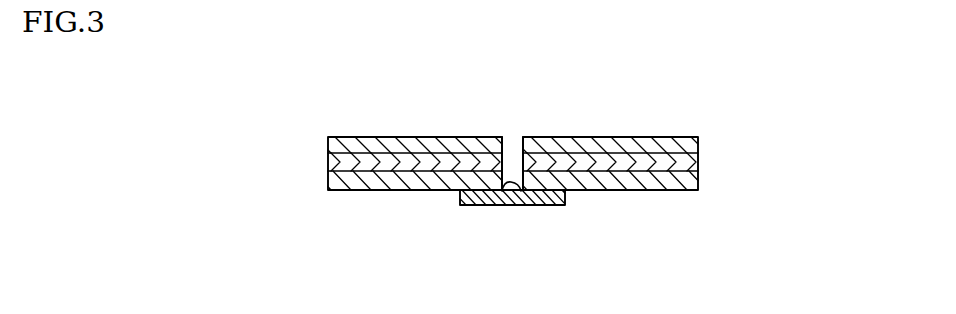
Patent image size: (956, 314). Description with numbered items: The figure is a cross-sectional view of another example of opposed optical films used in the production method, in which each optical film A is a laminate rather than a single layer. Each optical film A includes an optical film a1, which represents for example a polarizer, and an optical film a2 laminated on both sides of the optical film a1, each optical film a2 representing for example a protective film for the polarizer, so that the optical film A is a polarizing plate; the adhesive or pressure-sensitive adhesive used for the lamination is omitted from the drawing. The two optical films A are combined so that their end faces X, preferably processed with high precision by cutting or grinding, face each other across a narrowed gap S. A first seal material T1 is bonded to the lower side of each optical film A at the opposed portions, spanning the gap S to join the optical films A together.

The optical film A is at (755, 101).
The optical film a1 (polarizer) a1 is at (328, 159).
The optical film a2 (protective film) a2 is at (346, 136).
The gap S is at (513, 145).
The first seal material T1 is at (565, 199).
The end face X is at (506, 185).